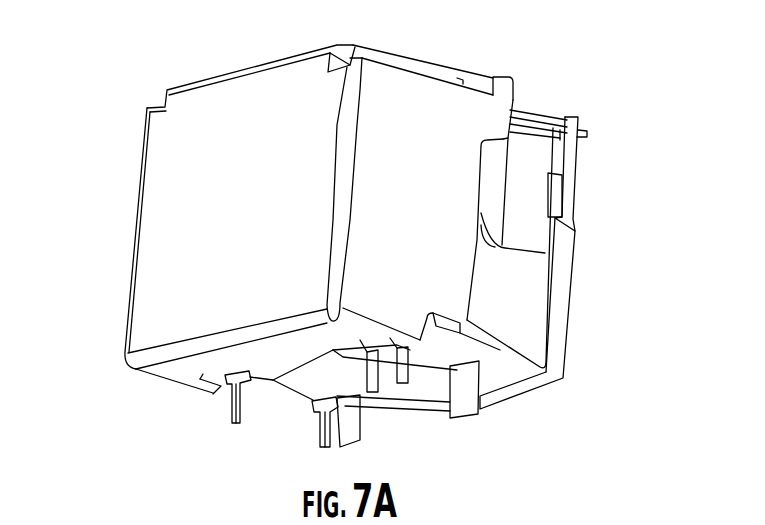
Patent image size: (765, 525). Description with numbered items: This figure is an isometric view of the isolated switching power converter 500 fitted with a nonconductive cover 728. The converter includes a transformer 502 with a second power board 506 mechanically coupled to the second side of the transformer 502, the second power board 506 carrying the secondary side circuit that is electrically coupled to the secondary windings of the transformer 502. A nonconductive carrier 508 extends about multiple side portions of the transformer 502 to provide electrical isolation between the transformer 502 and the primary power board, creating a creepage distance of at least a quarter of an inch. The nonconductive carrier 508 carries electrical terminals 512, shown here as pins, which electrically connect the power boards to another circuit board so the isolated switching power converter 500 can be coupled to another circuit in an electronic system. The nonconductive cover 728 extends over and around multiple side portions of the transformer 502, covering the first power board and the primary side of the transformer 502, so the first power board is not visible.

The isolated switching power converter 500 is at (351, 228).
The transformer 502 is at (508, 171).
The second power board 506 is at (573, 255).
The nonconductive carrier 508 is at (512, 288).
The electrical terminals 512 is at (230, 408).
The nonconductive cover 728 is at (163, 247).